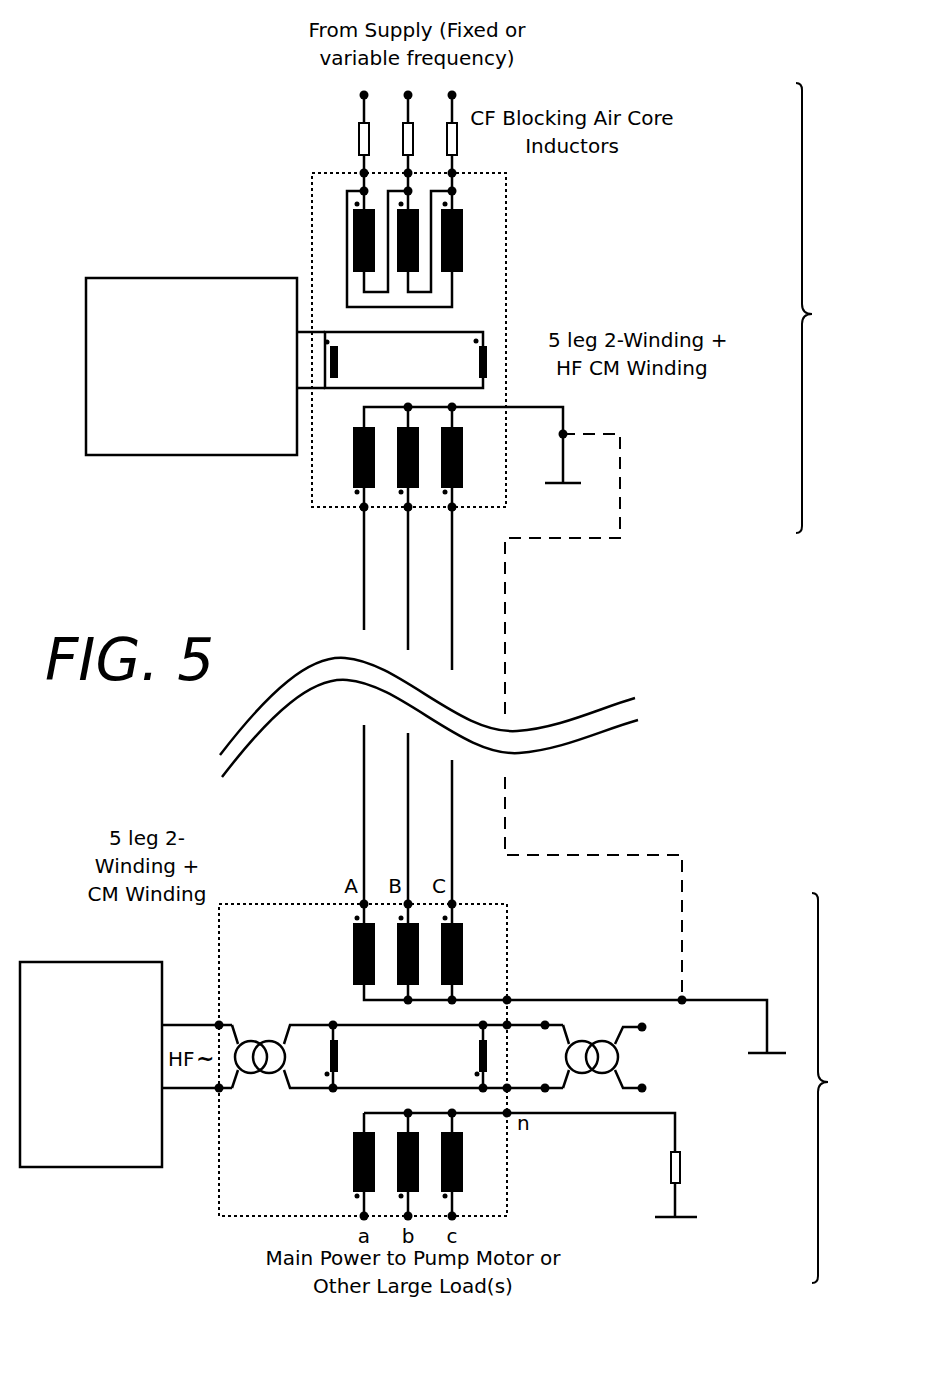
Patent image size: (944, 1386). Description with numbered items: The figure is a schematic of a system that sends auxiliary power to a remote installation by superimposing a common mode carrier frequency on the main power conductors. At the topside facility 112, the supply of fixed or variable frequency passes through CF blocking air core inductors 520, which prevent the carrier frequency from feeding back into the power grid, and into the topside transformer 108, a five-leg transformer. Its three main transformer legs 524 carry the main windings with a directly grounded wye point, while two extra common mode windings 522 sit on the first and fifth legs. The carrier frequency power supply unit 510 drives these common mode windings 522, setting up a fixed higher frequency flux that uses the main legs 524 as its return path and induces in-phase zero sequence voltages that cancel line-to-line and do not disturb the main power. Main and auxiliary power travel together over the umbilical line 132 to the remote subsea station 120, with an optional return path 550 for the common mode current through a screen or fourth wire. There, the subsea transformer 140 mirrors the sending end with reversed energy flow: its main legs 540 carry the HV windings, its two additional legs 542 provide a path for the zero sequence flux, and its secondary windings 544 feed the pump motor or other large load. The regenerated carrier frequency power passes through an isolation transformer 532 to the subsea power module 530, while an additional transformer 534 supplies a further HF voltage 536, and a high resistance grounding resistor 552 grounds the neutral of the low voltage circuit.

The CF blocking air core inductors 520 is at (343, 137).
The topside transformer 108 is at (312, 230).
The carrier frequency power supply unit 510 is at (191, 366).
The common mode windings 522 is at (506, 351).
The main transformer legs 524 is at (340, 464).
The topside facility 112 is at (828, 308).
The return path 550 is at (563, 538).
The umbilical line 132 is at (340, 601).
The subsea transformer 140 is at (219, 950).
The subsea power module 530 is at (91, 1064).
The isolation transformer 532 is at (261, 1024).
The additional legs 542 is at (418, 1057).
The main legs of subsea transformer 540 is at (488, 958).
The additional transformer 534 is at (596, 1084).
The HF voltage 536 is at (683, 1058).
The HRG resistor 552 is at (671, 1180).
The secondary windings of subsea transformer 544 is at (333, 1167).
The remote subsea station 120 is at (845, 1088).